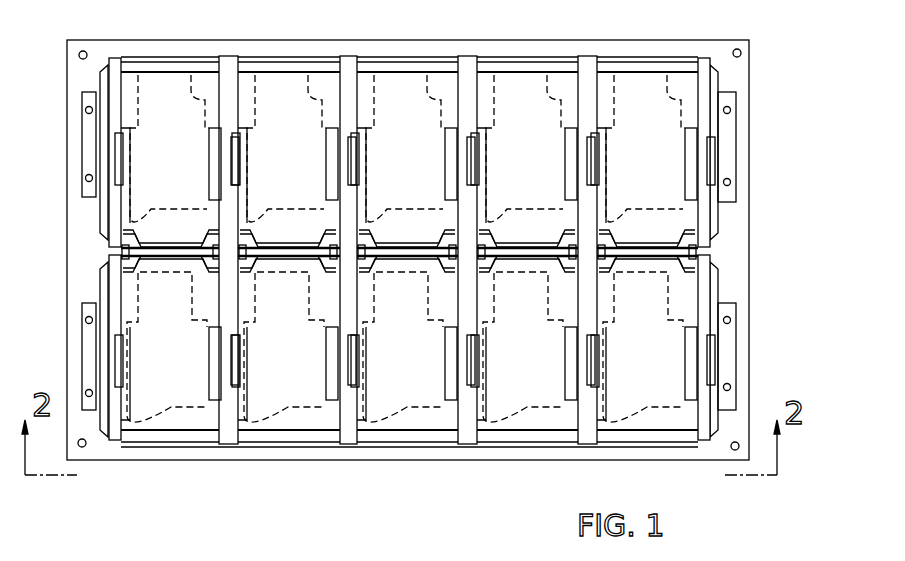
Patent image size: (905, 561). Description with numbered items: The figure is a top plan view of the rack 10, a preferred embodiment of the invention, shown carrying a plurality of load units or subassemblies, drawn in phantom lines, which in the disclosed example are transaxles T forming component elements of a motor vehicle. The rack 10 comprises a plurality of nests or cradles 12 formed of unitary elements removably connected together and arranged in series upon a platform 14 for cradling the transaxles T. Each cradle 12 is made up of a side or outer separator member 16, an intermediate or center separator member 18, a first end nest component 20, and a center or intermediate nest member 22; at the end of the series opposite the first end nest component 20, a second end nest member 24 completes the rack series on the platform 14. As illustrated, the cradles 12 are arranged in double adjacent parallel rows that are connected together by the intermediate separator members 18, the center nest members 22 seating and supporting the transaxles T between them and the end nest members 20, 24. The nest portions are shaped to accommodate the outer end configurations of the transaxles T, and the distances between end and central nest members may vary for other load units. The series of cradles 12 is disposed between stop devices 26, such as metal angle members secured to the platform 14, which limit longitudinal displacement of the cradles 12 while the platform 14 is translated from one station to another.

The rack 10 is at (414, 258).
The nest or cradle 12 is at (148, 46).
The platform 14 is at (752, 258).
The side or outer separator member 16 is at (161, 62).
The intermediate or center separator member 18 is at (165, 243).
The first end nest component 20 is at (705, 97).
The center or intermediate nest member 22 is at (333, 158).
The second end nest member 24 is at (113, 203).
The stop device 26 is at (88, 147).
The transaxle T is at (178, 94).